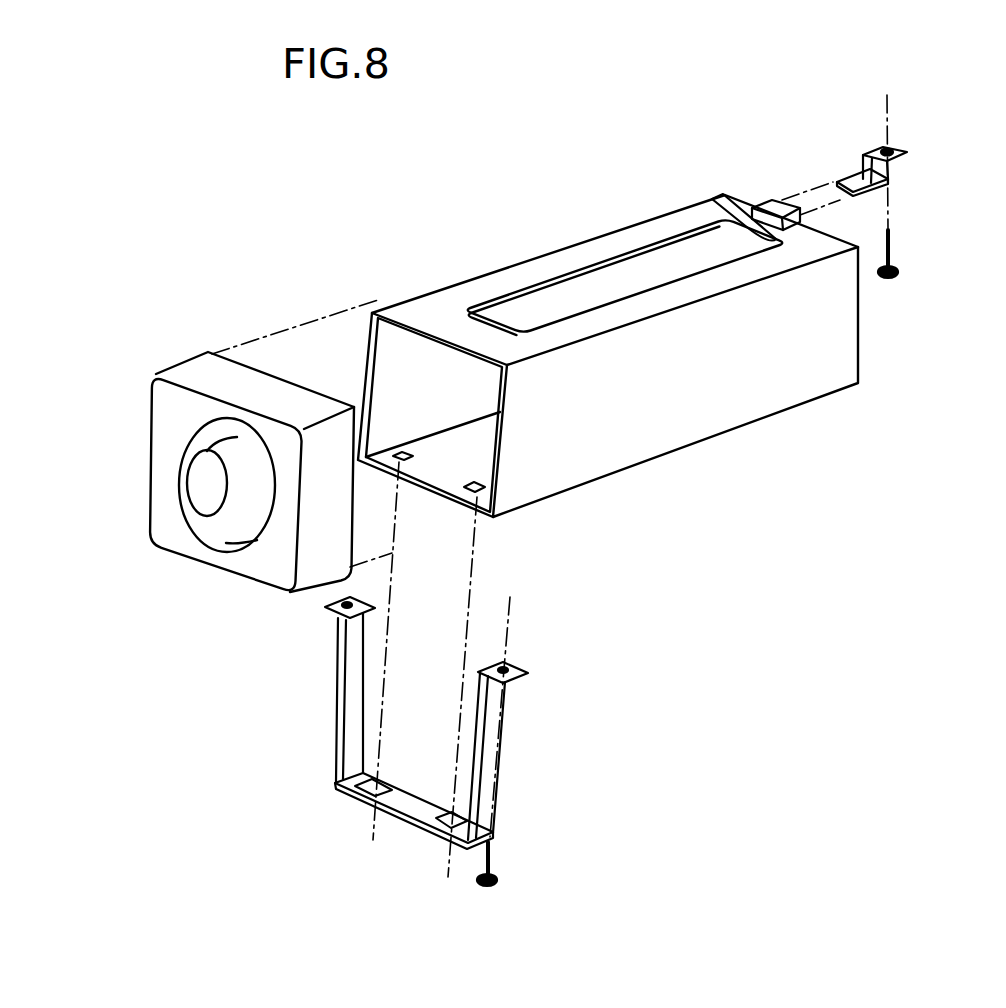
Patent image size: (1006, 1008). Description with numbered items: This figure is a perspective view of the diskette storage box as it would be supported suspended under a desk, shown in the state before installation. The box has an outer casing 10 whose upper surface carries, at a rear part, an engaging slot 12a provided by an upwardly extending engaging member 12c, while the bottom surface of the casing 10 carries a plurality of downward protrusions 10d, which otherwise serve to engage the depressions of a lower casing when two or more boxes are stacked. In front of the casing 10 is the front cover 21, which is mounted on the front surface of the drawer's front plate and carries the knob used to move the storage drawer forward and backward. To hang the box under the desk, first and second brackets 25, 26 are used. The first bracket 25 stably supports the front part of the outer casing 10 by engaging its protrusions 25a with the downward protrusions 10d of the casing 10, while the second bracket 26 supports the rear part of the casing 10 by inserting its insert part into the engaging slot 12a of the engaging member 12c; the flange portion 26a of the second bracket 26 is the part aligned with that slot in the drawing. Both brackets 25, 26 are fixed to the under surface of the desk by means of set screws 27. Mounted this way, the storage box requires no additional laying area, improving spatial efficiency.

The outer casing 10 is at (548, 263).
The downward protrusions 10d is at (408, 452).
The engaging slot 12a is at (722, 195).
The engaging member 12c is at (773, 202).
The front cover 21 is at (160, 440).
The first bracket 25 is at (352, 700).
The protrusions 25a is at (448, 822).
The second bracket 26 is at (893, 152).
The bracket flange 26a is at (846, 172).
The set screws 27 is at (897, 251).